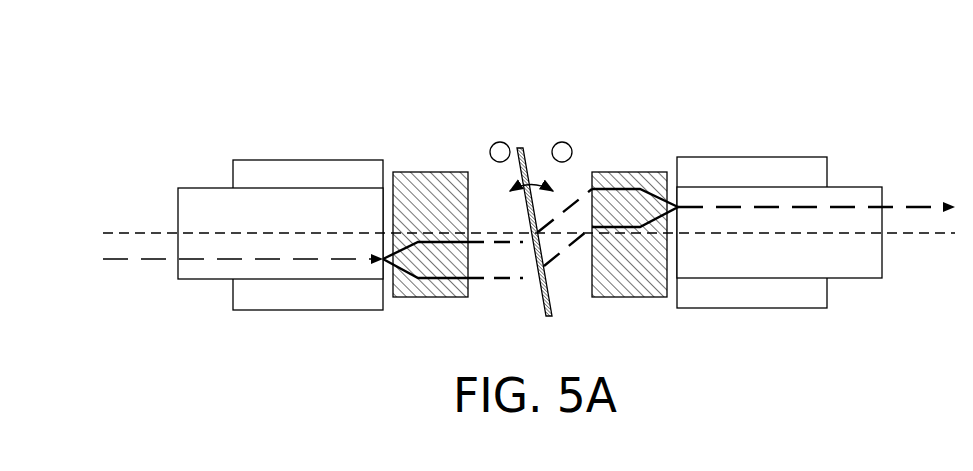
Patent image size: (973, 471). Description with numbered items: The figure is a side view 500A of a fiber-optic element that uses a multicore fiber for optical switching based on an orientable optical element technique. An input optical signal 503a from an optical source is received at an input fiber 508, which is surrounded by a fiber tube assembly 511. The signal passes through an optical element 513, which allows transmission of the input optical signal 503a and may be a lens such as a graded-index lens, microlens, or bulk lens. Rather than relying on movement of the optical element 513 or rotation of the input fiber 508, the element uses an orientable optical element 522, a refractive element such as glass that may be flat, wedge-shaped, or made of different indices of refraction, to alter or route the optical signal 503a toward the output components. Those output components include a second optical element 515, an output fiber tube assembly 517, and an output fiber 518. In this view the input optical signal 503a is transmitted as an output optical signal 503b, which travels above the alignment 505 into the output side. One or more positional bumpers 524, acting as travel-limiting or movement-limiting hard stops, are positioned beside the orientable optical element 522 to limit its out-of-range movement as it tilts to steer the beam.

The side view 500A is at (560, 38).
The input optical signal 503a is at (142, 262).
The output optical signal 503b is at (908, 207).
The alignment 505 is at (157, 233).
The input fiber 508 is at (207, 188).
The fiber tube assembly 511 is at (257, 160).
The optical element 513 is at (417, 172).
The optical element 515 is at (632, 172).
The output fiber tube assembly 517 is at (737, 157).
The output fiber 518 is at (840, 187).
The orientable optical element 522 is at (527, 158).
The positional bumpers 524 is at (573, 150).